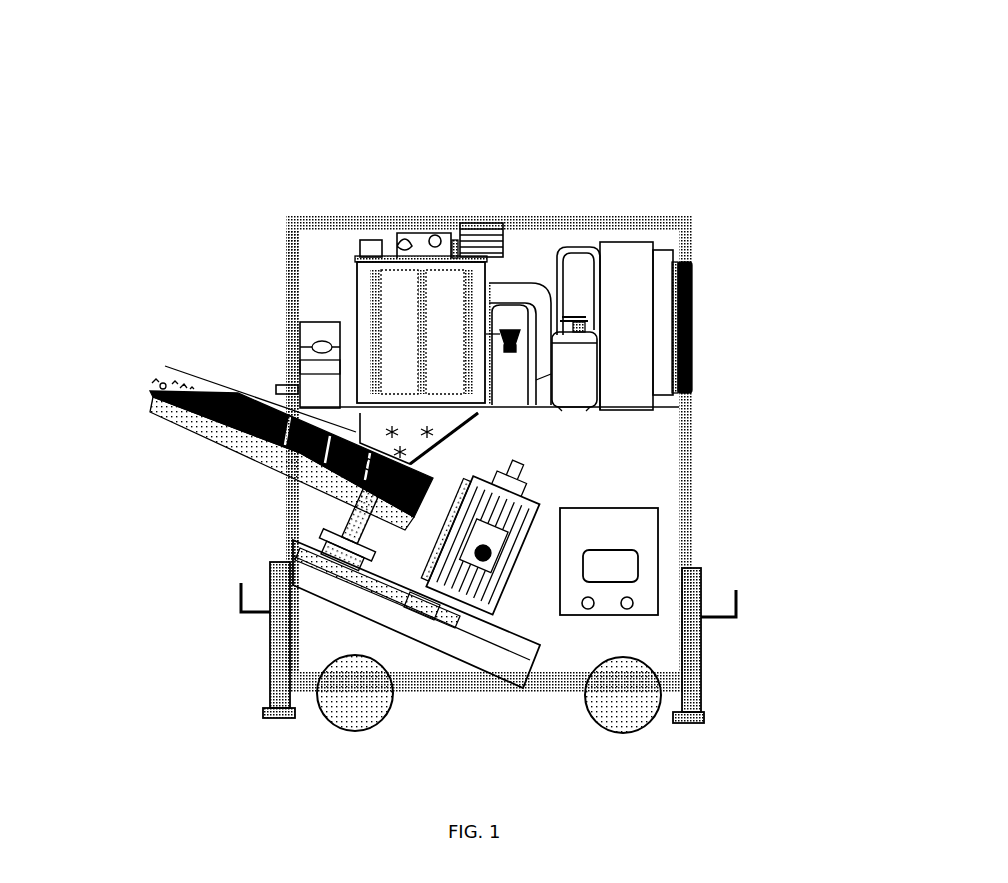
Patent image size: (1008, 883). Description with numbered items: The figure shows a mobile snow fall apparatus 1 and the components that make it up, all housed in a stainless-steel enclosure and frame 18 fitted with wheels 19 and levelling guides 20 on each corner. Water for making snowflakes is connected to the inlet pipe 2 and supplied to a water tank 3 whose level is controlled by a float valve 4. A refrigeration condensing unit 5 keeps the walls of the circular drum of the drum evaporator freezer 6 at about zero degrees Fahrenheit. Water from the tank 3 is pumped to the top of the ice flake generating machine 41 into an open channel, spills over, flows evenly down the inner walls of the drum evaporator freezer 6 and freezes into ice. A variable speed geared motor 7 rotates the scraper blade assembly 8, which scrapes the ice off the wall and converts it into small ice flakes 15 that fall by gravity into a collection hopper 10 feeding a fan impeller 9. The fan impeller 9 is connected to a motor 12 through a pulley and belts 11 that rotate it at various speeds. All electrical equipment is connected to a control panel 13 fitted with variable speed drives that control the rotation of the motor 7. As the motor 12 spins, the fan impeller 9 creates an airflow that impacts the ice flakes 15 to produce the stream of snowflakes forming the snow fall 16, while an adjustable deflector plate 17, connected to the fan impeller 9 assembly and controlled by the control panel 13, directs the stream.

The snow fall apparatus 1 is at (768, 384).
The inlet pipe 2 is at (283, 384).
The water tank 3 is at (306, 366).
The float valve 4 is at (307, 326).
The refrigeration condensing unit 5 is at (550, 328).
The drum evaporator freezer 6 is at (491, 283).
The variable speed geared motor 7 is at (416, 232).
The scraper blade assembly 8 is at (372, 284).
The fan impeller 9 is at (322, 473).
The collection hopper 10 is at (173, 367).
The pulley and belts 11 is at (322, 567).
The motor 12 is at (518, 567).
The control panel 13 is at (642, 550).
The ice flakes 15 is at (470, 425).
The snow fall 16 is at (150, 386).
The adjustable deflector plate 17 is at (245, 437).
The enclosure and frame 18 is at (312, 516).
The wheels 19 is at (640, 697).
The levelling guides 20 is at (690, 653).
The ice flake generating machine 41 is at (463, 178).